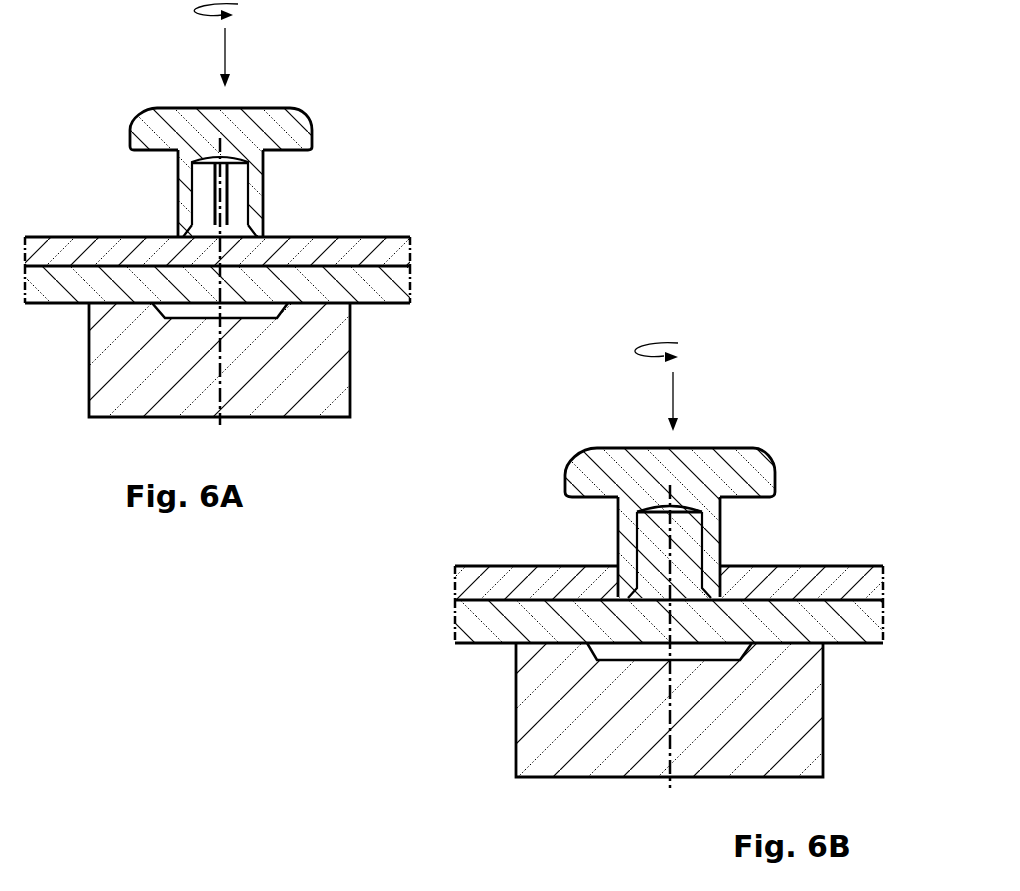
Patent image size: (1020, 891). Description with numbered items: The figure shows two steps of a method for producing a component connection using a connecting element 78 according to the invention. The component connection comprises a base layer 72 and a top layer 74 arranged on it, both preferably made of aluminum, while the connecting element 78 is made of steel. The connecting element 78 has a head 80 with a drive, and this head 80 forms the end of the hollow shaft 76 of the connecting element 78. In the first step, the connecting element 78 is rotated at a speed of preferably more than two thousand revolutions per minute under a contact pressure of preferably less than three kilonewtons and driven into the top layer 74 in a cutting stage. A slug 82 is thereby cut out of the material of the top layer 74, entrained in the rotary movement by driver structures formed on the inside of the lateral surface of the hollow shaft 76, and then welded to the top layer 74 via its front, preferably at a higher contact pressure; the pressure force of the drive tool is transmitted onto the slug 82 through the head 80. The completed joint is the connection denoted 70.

In FIG. 6B, the riveted joint assembly 70 is at (803, 432).
In FIG. 6A, the base layer 72 is at (392, 288).
In FIG. 6B, the base layer 72 is at (870, 642).
In FIG. 6A, the top layer 74 is at (392, 253).
In FIG. 6B, the top layer 74 is at (827, 567).
In FIG. 6A, the hollow shaft 76 is at (178, 185).
In FIG. 6A, the connecting element 78 is at (318, 168).
In FIG. 6A, the head 80 is at (272, 111).
In FIG. 6B, the slug 82 is at (653, 532).